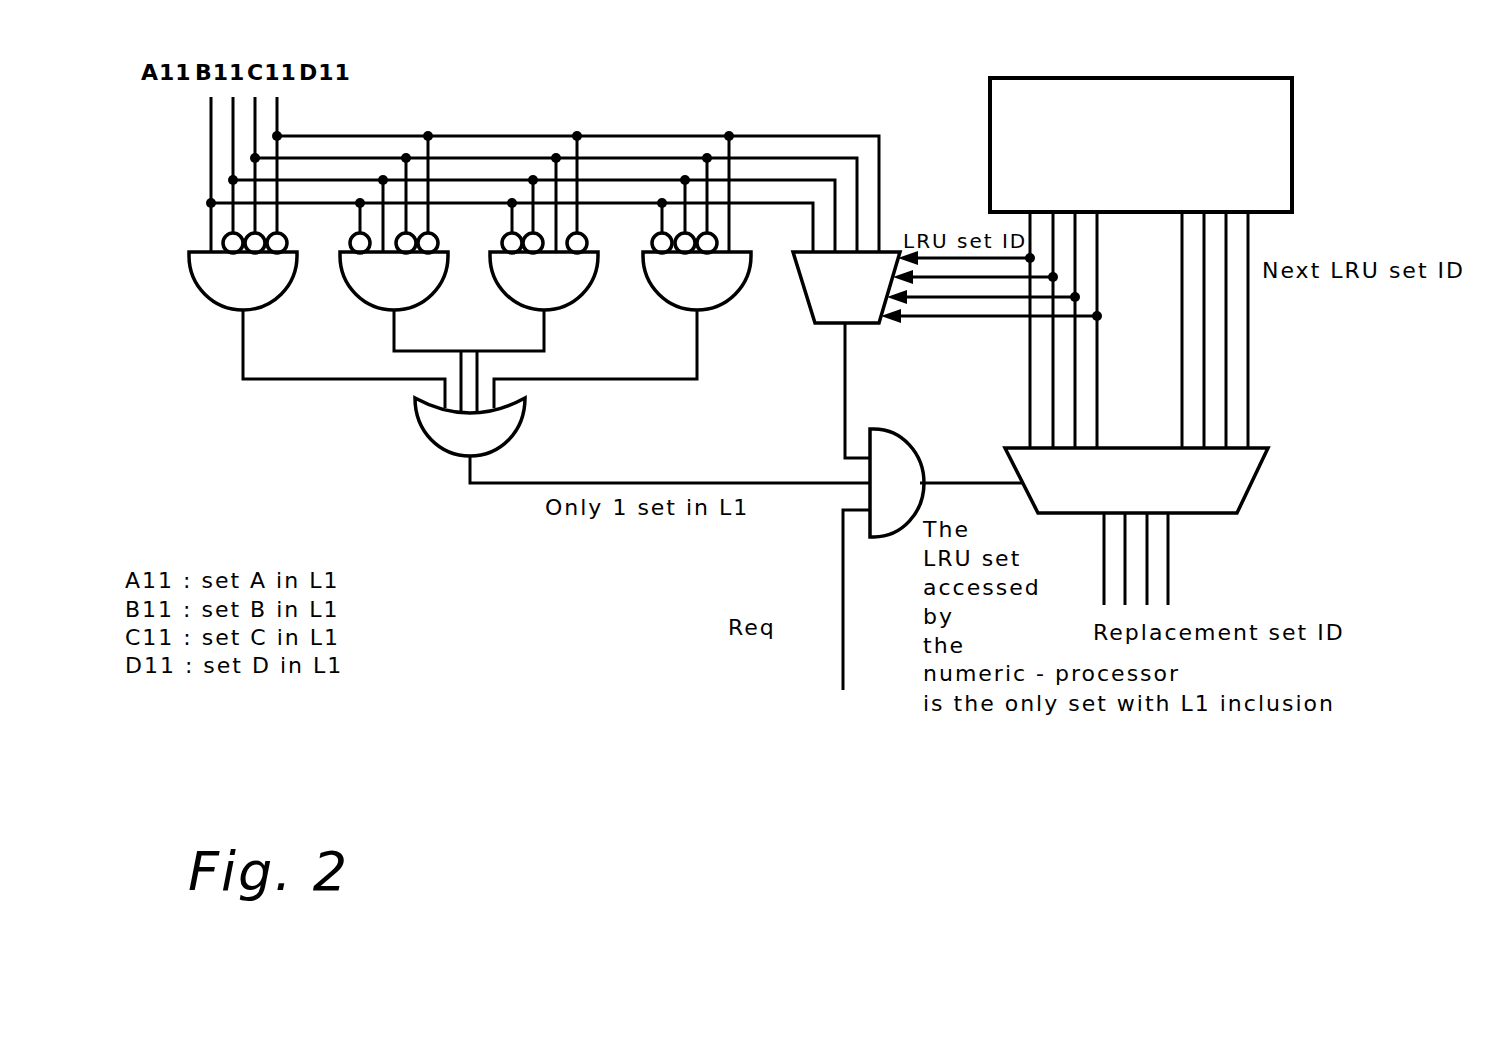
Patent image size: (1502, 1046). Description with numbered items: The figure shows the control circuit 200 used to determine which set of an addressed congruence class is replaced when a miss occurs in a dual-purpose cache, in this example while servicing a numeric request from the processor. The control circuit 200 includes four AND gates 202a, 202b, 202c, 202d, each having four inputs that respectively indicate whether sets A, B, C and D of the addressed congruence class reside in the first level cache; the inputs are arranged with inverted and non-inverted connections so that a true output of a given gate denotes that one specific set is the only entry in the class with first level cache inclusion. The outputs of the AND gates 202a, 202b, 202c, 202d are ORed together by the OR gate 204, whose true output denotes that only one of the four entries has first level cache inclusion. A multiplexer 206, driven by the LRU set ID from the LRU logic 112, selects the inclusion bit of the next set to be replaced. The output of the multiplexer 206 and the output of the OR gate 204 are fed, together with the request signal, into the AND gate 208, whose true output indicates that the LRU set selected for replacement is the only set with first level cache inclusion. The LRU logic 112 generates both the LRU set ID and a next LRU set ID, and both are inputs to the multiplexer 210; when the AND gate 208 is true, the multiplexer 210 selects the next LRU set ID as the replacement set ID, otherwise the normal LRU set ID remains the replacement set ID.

The LRU logic 112 is at (1294, 92).
The control circuit 200 is at (272, 500).
The AND gate 202a is at (194, 286).
The AND gate 202b is at (345, 286).
The AND gate 202c is at (497, 286).
The AND gate 202d is at (648, 286).
The OR gate 204 is at (510, 432).
The multiplexer 206 is at (812, 312).
The AND gate 208 is at (903, 443).
The multiplexer 210 is at (1263, 460).